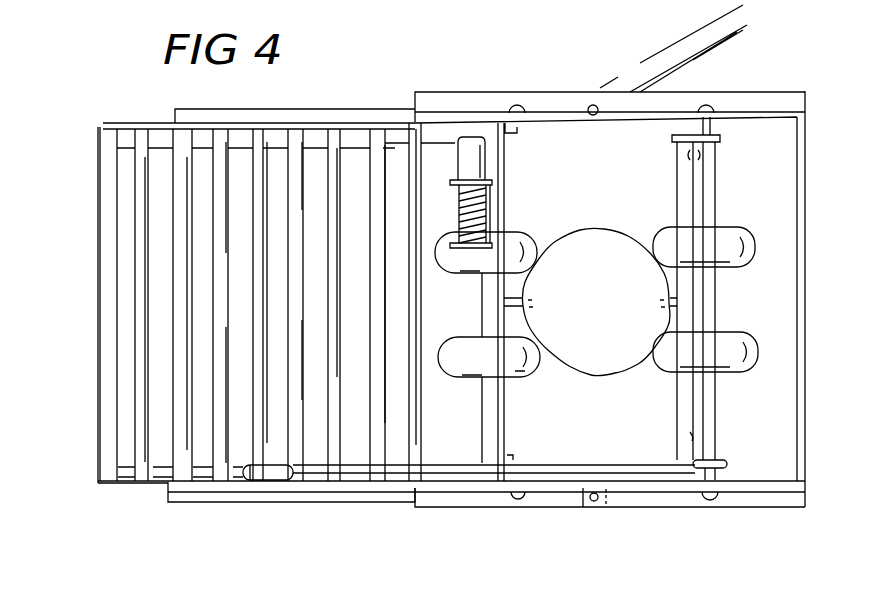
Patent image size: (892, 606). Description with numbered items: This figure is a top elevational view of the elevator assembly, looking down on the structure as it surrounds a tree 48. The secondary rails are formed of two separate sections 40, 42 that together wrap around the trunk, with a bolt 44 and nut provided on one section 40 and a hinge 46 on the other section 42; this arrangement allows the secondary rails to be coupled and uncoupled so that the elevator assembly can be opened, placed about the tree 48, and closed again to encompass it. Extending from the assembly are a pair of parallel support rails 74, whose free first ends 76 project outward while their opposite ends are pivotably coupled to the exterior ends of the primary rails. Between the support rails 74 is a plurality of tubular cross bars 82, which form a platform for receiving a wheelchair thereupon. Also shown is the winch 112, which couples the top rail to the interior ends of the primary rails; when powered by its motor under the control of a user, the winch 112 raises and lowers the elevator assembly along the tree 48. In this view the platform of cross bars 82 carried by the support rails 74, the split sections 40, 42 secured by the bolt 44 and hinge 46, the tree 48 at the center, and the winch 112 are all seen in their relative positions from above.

The tubular cross bars 82 is at (135, 213).
The free first ends 76 is at (160, 493).
The support rails 74 is at (178, 500).
The section 40 is at (545, 500).
The bolt 44 is at (594, 502).
The section 42 is at (660, 507).
The hinge 46 is at (597, 115).
The tree 48 is at (585, 357).
The winch 112 is at (480, 218).